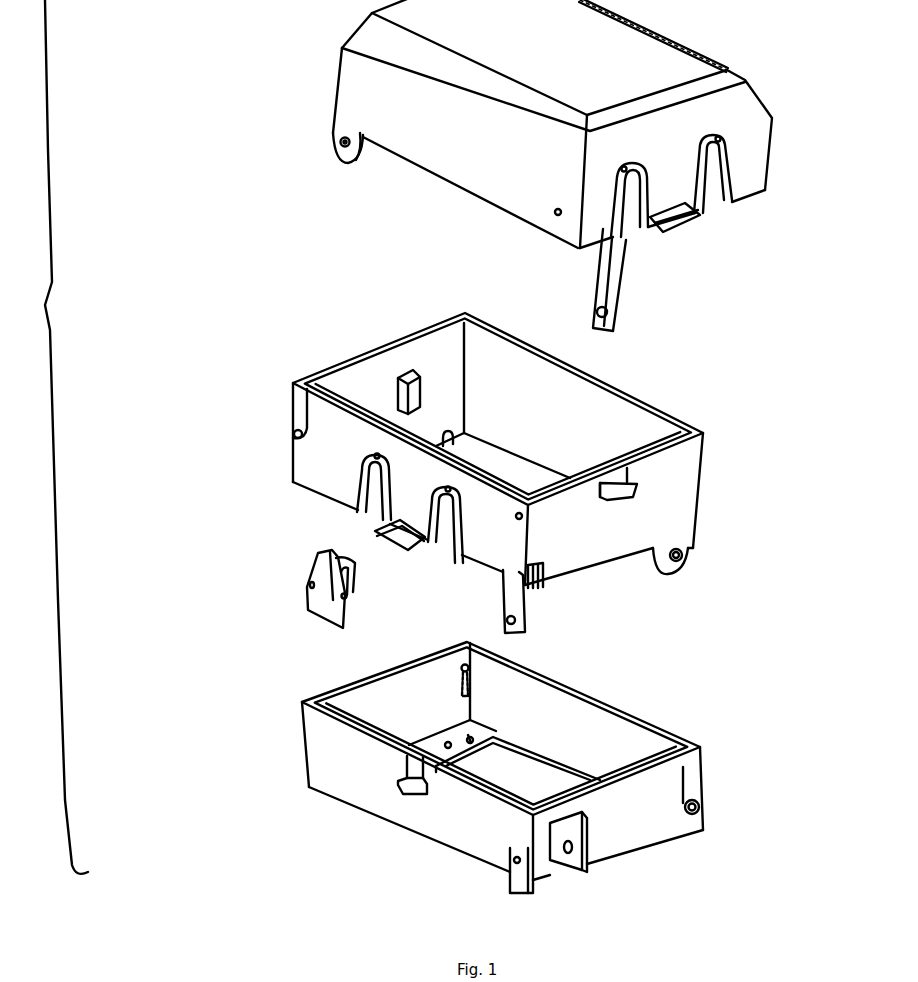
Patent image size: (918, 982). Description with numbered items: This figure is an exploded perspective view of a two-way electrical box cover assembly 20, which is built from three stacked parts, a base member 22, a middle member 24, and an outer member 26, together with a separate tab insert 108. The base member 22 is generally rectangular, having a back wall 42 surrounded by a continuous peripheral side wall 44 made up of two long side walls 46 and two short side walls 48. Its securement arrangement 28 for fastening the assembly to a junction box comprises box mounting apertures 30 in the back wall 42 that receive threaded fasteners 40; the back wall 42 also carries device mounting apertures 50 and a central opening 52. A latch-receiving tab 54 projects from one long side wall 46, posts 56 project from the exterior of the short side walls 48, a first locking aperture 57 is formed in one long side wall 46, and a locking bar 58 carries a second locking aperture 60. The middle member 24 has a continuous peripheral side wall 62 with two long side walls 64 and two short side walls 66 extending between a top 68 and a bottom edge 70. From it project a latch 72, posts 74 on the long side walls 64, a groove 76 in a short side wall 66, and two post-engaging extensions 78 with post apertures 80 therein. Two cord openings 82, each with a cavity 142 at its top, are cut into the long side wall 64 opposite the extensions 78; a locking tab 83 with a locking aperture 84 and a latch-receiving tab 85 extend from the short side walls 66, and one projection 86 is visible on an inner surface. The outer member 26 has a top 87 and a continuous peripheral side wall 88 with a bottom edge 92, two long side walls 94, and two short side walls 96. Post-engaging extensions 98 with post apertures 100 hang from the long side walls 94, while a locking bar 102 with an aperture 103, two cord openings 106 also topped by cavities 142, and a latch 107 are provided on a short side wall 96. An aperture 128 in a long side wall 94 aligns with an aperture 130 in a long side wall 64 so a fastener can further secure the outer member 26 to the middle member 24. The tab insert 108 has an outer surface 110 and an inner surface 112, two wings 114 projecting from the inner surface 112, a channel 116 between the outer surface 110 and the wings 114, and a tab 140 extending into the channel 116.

The two-way electrical box cover assembly 20 is at (48, 437).
The base member 22 is at (253, 694).
The middle member 24 is at (214, 425).
The outer member 26 is at (228, 60).
The securement arrangement 28 is at (485, 677).
The box mounting apertures 30 is at (467, 740).
The threaded fasteners 40 is at (462, 678).
The back wall 42 is at (476, 728).
The continuous peripheral side wall 44 is at (570, 710).
The long side walls 46 is at (358, 769).
The short side walls 48 is at (433, 698).
The device mounting apertures 50 is at (445, 745).
The central opening 52 is at (498, 770).
The latch-receiving tab 54 is at (413, 797).
The posts 56 is at (704, 802).
The first locking aperture 57 is at (510, 857).
The locking bar 58 is at (590, 850).
The second locking aperture 60 is at (572, 858).
The continuous peripheral side wall 62 is at (593, 427).
The long side walls 64 is at (550, 410).
The short side walls 66 is at (448, 358).
The top 68 is at (443, 320).
The bottom edge 70 is at (605, 569).
The latch 72 is at (412, 547).
The posts 74 is at (294, 432).
The groove 76 is at (545, 568).
The post-engaging extensions 78 is at (690, 550).
The post apertures 80 is at (684, 564).
The cord openings 82 is at (445, 515).
The locking tab 83 is at (524, 607).
The locking aperture 84 is at (503, 620).
The latch-receiving tab 85 is at (636, 497).
The projections 86 is at (395, 397).
The top 87 is at (566, 49).
The continuous peripheral side wall 88 is at (455, 157).
The bottom edge 92 is at (522, 231).
The long side walls 94 is at (423, 126).
The short side walls 96 is at (685, 177).
The post-engaging extensions 98 is at (356, 162).
The post apertures 100 is at (330, 143).
The locking bar 102 is at (622, 280).
The aperture 103 is at (608, 313).
The cord openings 106 is at (643, 163).
The latch 107 is at (700, 220).
The tab insert 108 is at (270, 574).
The outer surface 110 is at (324, 597).
The inner surface 112 is at (352, 616).
The wings 114 is at (354, 565).
The channel 116 is at (348, 597).
The aperture 128 is at (553, 212).
The aperture 130 is at (517, 519).
The tab 140 is at (338, 549).
The cavity 142 is at (630, 165).